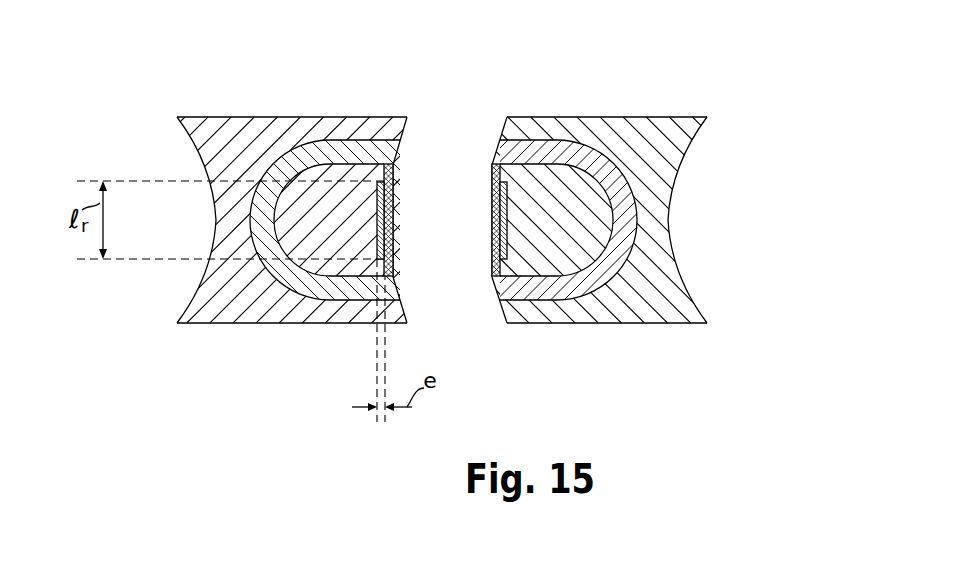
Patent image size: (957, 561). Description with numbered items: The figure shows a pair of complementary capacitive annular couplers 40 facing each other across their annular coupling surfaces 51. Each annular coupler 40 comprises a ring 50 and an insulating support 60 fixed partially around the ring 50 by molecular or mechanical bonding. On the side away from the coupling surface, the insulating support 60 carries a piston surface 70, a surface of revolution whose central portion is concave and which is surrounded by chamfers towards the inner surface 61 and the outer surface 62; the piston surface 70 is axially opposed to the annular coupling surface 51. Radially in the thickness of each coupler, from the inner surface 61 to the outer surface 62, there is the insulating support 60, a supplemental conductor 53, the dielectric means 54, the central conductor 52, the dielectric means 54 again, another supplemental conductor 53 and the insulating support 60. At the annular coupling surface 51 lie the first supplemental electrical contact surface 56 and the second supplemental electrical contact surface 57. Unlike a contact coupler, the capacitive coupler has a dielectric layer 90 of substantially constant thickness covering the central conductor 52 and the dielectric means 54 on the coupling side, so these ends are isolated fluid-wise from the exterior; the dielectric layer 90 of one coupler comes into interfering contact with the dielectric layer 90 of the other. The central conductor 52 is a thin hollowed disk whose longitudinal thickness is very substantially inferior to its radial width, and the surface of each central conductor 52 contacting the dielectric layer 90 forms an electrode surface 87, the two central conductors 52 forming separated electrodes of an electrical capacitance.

The annular coupler 40 is at (184, 295).
The ring 50 is at (356, 355).
The annular coupling surface 51 is at (407, 128).
The central conductor 52 is at (376, 214).
The supplemental conductor 53 is at (258, 217).
The dielectric means 54 is at (322, 193).
The first supplemental electrical contact surface 56 is at (396, 157).
The second supplemental electrical contact surface 57 is at (395, 283).
The insulating support 60 is at (192, 314).
The inner surface 61 is at (265, 117).
The outer surface 62 is at (233, 323).
The piston surface 70 is at (214, 248).
The electrode surface 87 is at (393, 222).
The dielectric layer 90 is at (492, 243).